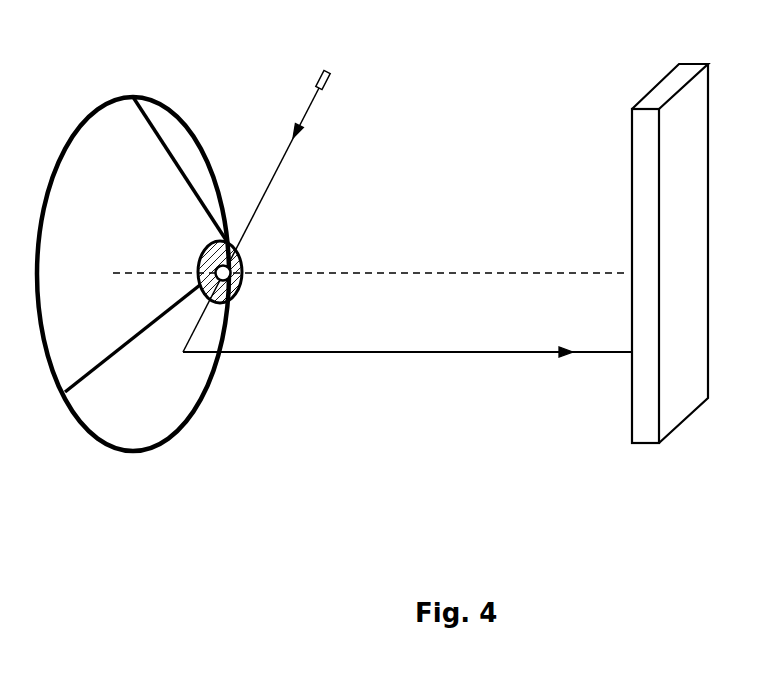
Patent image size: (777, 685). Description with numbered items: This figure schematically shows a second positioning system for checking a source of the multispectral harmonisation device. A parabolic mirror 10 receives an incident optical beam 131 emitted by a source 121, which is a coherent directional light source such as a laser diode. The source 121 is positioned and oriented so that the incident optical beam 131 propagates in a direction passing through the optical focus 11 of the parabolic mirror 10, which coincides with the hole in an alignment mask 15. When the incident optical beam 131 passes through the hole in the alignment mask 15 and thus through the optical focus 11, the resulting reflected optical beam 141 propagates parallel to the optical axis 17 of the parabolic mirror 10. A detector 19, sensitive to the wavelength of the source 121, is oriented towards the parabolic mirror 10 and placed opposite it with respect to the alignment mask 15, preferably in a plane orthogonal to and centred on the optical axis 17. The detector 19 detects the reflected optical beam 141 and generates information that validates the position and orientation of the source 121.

The parabolic mirror 10 is at (173, 105).
The optical focus 11 is at (242, 271).
The alignment mask 15 is at (198, 281).
The optical axis 17 is at (392, 272).
The detector 19 is at (643, 444).
The source 121 is at (320, 74).
The incident optical beam 131 is at (305, 112).
The reflected optical beam 141 is at (400, 352).